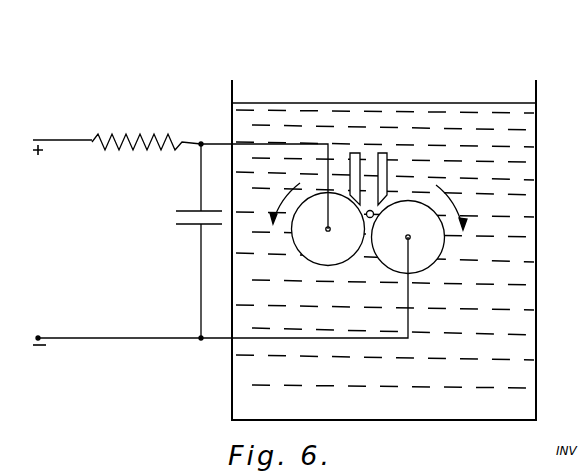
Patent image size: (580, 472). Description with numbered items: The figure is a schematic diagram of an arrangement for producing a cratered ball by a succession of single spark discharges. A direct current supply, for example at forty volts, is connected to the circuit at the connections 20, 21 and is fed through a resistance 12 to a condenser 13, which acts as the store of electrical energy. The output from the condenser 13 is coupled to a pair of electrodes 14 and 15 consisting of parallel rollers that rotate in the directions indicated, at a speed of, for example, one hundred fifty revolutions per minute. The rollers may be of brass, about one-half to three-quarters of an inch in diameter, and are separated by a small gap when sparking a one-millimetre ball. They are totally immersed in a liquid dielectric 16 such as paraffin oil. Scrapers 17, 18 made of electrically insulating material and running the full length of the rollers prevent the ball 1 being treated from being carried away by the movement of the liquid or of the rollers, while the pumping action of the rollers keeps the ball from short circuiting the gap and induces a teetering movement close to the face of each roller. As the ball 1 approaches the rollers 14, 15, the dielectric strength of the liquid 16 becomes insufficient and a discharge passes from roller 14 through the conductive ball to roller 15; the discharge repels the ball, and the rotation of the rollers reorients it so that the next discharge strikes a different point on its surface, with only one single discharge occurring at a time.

The ball 1 is at (375, 216).
The resistance 12 is at (126, 136).
The condenser 13 is at (190, 232).
The electrode roller 14 is at (438, 244).
The electrode roller 15 is at (311, 257).
The liquid dielectric 16 is at (524, 326).
The scraper 17 is at (389, 168).
The scraper 18 is at (349, 170).
The circuit connection 20 is at (34, 140).
The circuit connection 21 is at (40, 337).